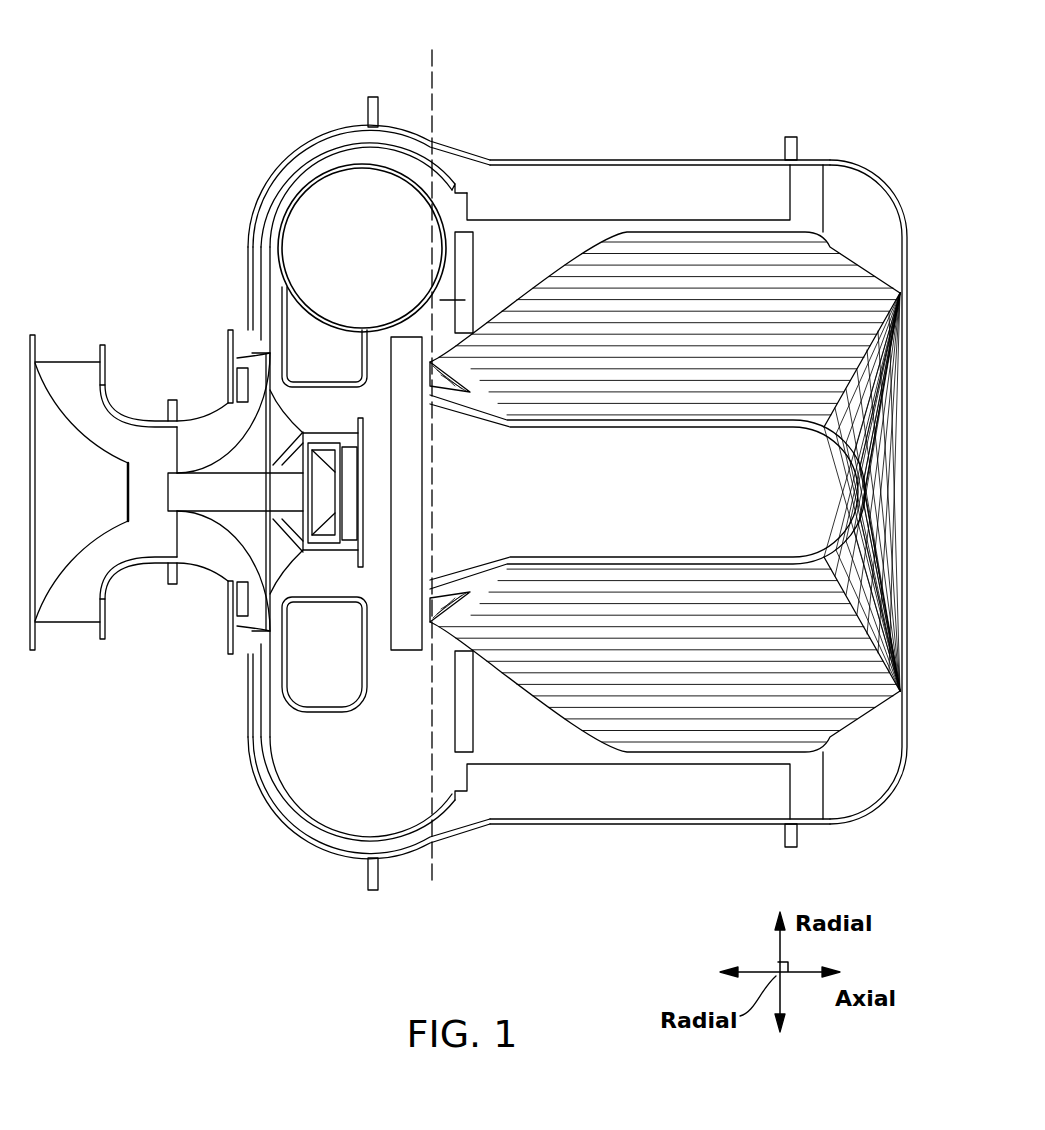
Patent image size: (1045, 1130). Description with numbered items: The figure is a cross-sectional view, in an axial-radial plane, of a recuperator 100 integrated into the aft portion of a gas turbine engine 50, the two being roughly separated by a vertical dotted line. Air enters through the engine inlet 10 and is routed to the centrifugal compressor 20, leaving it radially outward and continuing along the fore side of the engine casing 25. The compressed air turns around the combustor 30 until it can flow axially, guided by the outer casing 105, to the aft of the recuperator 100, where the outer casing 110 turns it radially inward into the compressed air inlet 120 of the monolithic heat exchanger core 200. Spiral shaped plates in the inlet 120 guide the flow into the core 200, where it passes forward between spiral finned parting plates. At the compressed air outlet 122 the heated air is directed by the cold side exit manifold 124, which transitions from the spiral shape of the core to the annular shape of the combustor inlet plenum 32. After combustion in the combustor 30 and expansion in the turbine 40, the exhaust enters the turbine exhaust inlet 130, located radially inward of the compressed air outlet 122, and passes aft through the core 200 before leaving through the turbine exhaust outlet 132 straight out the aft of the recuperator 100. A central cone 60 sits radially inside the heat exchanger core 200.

The engine inlet 10 is at (70, 356).
The centrifugal compressor 20 is at (228, 447).
The engine casing 25 is at (257, 184).
The combustor 30 is at (368, 271).
The combustor inlet plenum 32 is at (455, 300).
The turbine 40 is at (363, 413).
The gas turbine engine 50 is at (274, 92).
The central cone 60 is at (713, 508).
The recuperator 100 is at (730, 82).
The outer casing 105 is at (672, 160).
The outer casing 110 is at (876, 185).
The compressed air inlet 120 is at (845, 248).
The compressed air outlet 122 is at (543, 265).
The cold side exit manifold 124 is at (497, 260).
The turbine exhaust inlet 130 is at (468, 397).
The turbine exhaust outlet 132 is at (868, 352).
The monolithic heat exchanger core 200 is at (670, 348).